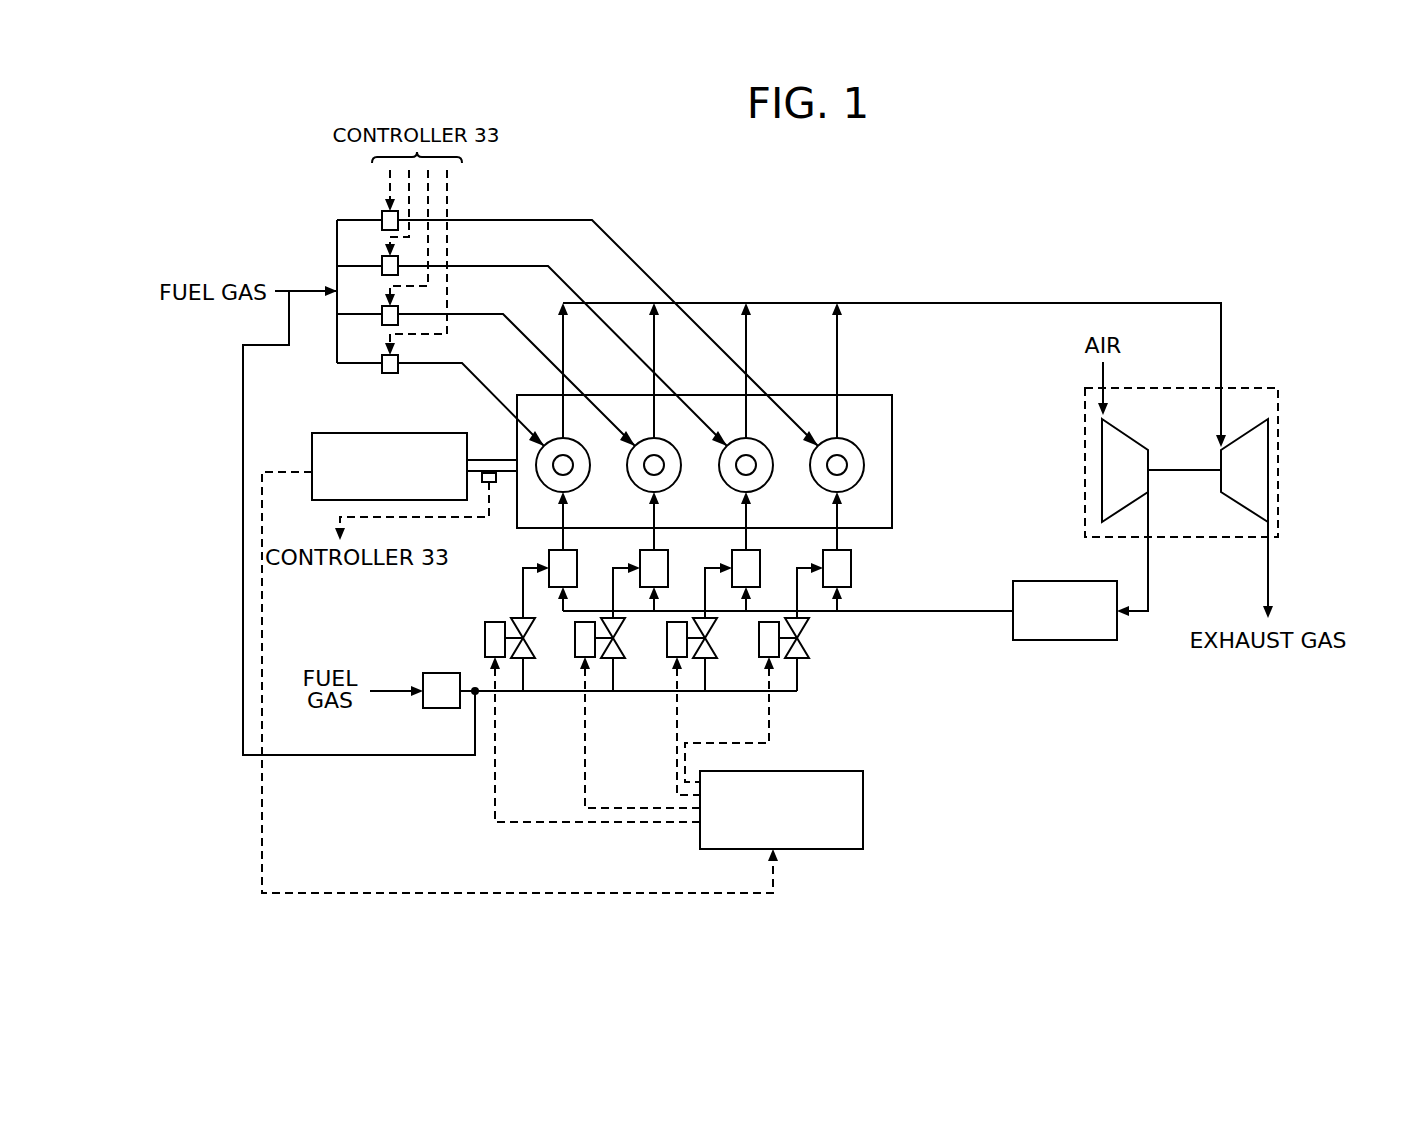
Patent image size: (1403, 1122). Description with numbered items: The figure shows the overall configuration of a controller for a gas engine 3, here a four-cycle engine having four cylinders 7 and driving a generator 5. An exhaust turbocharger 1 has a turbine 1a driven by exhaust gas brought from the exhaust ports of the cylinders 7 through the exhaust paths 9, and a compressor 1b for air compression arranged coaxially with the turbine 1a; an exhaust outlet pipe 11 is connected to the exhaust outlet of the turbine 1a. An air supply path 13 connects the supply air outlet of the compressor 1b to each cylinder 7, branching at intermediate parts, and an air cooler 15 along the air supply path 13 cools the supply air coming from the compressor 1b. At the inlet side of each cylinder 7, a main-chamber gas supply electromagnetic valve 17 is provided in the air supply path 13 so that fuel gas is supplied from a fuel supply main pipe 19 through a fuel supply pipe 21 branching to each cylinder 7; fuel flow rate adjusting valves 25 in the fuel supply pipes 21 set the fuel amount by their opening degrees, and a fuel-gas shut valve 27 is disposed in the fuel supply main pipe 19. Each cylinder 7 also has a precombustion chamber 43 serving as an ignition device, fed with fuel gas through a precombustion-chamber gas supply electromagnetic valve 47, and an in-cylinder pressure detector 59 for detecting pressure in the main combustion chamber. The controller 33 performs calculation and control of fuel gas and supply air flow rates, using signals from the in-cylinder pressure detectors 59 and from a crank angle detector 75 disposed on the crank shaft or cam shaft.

The exhaust turbocharger 1 is at (1249, 378).
The turbine 1a is at (1268, 452).
The compressor 1b is at (1102, 450).
The gas engine 3 is at (871, 384).
The generator 5 is at (432, 433).
The cylinder 7 is at (550, 442).
The exhaust path 9 is at (998, 303).
The exhaust outlet pipe 11 is at (1268, 567).
The air supply path 13 is at (888, 611).
The air cooler 15 is at (1055, 581).
The main-chamber gas supply electromagnetic valve 17 is at (545, 558).
The fuel supply main pipe 19 is at (540, 693).
The fuel supply pipe 21 is at (521, 590).
The fuel flow rate adjusting valve 25 is at (485, 631).
The fuel-gas shut valve 27 is at (430, 673).
The controller 33 is at (795, 771).
The precombustion chamber 43 is at (568, 475).
The precombustion-chamber gas supply electromagnetic valve 47 is at (388, 374).
The in-cylinder pressure detector 59 is at (585, 467).
The crank angle detector 75 is at (495, 483).